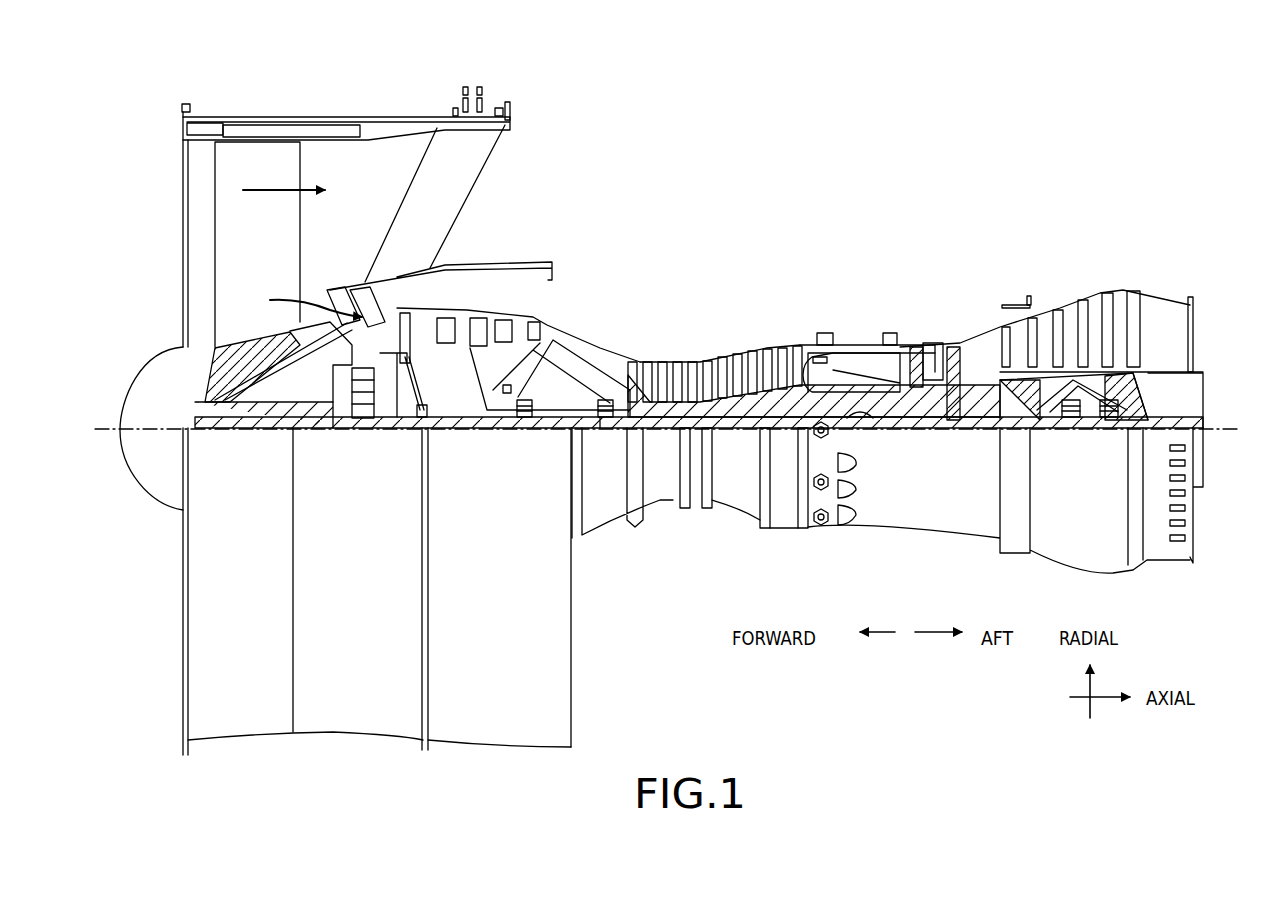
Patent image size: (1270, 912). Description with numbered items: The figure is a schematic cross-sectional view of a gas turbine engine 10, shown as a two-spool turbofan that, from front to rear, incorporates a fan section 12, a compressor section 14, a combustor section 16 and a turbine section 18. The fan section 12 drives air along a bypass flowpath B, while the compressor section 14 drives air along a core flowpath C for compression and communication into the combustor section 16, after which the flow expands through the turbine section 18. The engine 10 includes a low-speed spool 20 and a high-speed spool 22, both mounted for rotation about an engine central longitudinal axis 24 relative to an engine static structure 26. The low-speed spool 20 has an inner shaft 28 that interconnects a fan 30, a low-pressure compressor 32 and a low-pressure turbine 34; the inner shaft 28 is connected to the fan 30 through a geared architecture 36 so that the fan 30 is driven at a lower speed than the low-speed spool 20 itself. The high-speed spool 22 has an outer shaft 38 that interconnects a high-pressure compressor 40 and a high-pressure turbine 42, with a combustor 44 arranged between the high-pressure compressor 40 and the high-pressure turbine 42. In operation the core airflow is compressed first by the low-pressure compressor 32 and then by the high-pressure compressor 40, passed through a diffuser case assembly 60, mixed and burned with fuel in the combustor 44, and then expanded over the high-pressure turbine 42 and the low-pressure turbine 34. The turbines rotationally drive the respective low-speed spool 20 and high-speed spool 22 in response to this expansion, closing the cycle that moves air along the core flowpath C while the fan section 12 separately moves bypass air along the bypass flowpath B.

The gas turbine engine 10 is at (975, 158).
The fan section 12 is at (420, 92).
The compressor section 14 is at (428, 230).
The combustor section 16 is at (918, 230).
The turbine section 18 is at (1133, 230).
The low-speed spool 20 is at (745, 440).
The high-speed spool 22 is at (768, 348).
The engine central longitudinal axis 24 is at (1224, 426).
The engine static structure 26 is at (792, 540).
The inner shaft 28 is at (612, 430).
The fan 30 is at (259, 256).
The low-pressure compressor 32 is at (480, 342).
The low-pressure turbine 34 is at (1073, 312).
The geared architecture 36 is at (383, 405).
The outer shaft 38 is at (862, 428).
The high-pressure compressor 40 is at (722, 352).
The high-pressure turbine 42 is at (932, 341).
The combustor 44 is at (850, 366).
The diffuser case assembly 60 is at (800, 322).
The bypass flowpath B is at (284, 178).
The core flowpath C is at (318, 307).